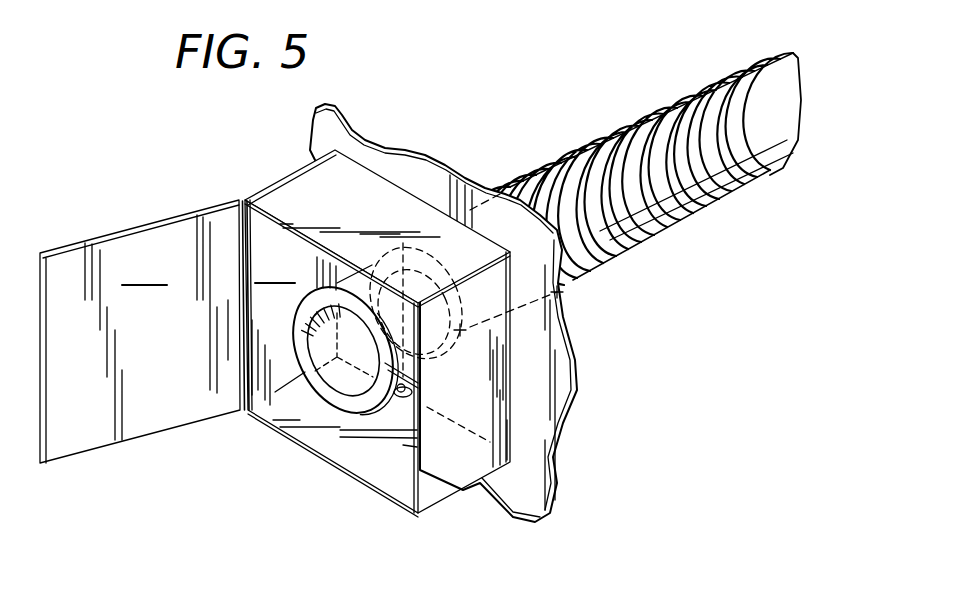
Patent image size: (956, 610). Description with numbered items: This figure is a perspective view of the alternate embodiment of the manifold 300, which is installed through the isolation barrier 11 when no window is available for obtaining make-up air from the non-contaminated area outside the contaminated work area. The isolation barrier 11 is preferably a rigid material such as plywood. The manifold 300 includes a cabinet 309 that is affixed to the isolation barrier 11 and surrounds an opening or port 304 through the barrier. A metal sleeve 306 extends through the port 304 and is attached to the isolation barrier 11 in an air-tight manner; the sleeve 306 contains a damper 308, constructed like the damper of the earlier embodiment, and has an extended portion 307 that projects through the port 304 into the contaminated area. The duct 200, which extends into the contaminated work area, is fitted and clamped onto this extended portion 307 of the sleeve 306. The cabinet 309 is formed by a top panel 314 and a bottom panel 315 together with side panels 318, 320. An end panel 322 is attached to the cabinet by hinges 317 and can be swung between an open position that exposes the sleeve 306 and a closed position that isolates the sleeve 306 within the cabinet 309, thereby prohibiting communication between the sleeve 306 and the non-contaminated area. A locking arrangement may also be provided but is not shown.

The isolation barrier 11 is at (383, 153).
The duct 200 is at (690, 76).
The manifold 300 is at (272, 166).
The port 304 is at (443, 360).
The metal sleeve 306 is at (393, 363).
The extended portion 307 is at (557, 292).
The damper 308 is at (427, 335).
The cabinet 309 is at (253, 196).
The top panel 314 is at (302, 187).
The bottom panel 315 is at (322, 440).
The hinges 317 is at (240, 222).
The side panel 318 is at (335, 327).
The side panel 320 is at (447, 487).
The end panel 322 is at (140, 331).